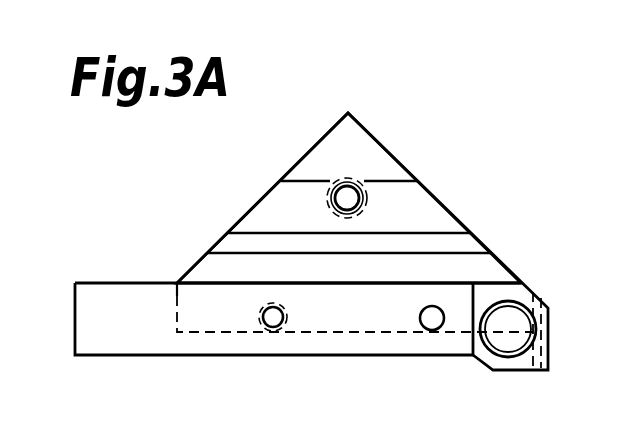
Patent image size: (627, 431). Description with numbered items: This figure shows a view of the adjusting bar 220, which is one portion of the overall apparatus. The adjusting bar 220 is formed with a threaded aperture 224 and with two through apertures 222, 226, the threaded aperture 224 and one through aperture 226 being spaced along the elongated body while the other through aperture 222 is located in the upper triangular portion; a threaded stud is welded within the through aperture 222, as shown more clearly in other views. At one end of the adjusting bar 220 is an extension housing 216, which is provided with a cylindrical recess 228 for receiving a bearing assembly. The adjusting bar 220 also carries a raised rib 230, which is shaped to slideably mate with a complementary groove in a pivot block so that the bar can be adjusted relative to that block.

The extension housing 216 is at (511, 370).
The adjusting bar 220 is at (437, 197).
The through aperture 222 is at (356, 192).
The threaded aperture 224 is at (273, 318).
The through aperture 226 is at (432, 320).
The cylindrical recess 228 is at (518, 340).
The raised rib 230 is at (480, 238).